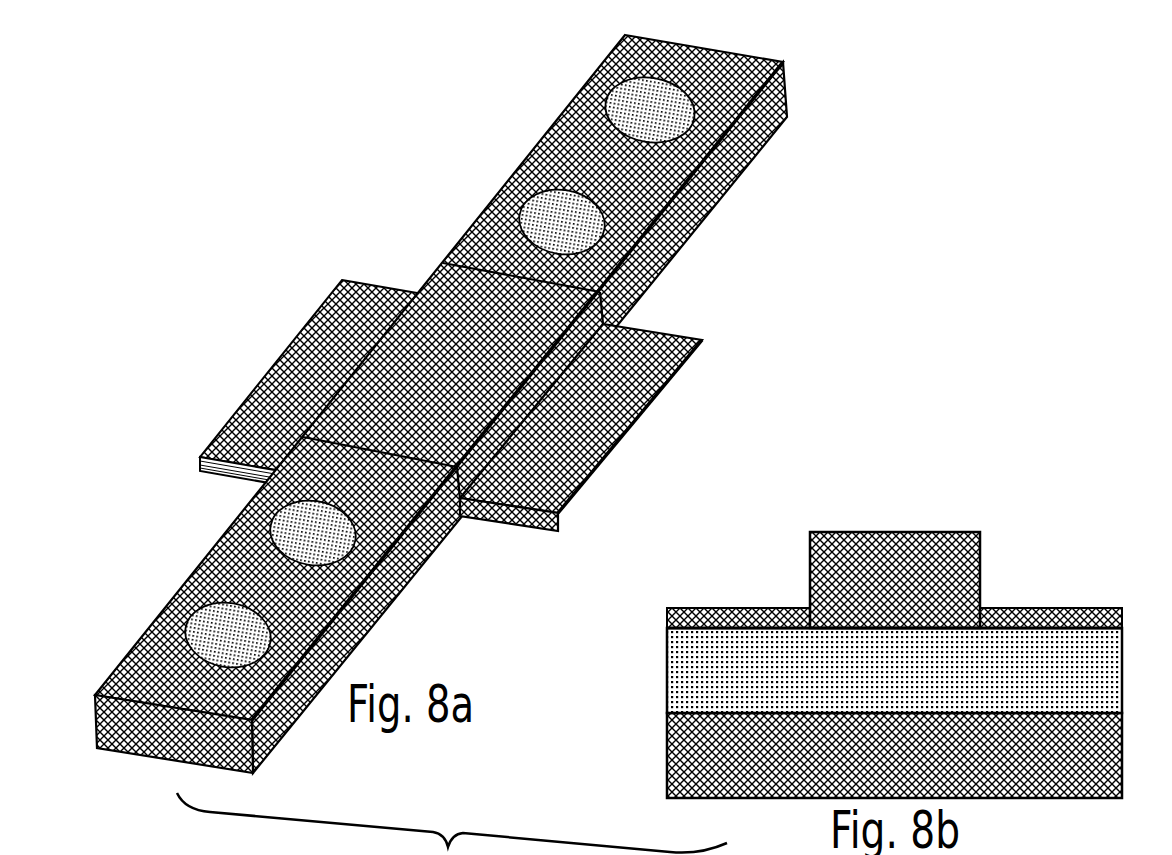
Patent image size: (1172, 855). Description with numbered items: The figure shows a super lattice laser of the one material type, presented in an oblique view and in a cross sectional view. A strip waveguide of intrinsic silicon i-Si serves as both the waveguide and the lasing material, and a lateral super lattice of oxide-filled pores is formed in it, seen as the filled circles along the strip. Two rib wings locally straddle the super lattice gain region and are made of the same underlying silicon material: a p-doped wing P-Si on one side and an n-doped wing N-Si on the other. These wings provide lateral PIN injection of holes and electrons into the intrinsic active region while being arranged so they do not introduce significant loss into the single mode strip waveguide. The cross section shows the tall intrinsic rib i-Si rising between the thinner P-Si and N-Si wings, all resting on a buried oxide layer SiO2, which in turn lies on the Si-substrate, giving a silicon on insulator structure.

In FIG. 8A, the P-Si wing P-Si is at (320, 384).
In FIG. 8B, the P-Si wing P-Si is at (742, 608).
In FIG. 8A, the intrinsic Si strip waveguide i-Si is at (441, 404).
In FIG. 8B, the intrinsic Si strip waveguide i-Si is at (895, 580).
In FIG. 8A, the N-Si wing N-Si is at (581, 427).
In FIG. 8B, the N-Si wing N-Si is at (1047, 608).
In FIG. 8B, the SiO2 insulator layer SiO2 is at (894, 670).
In FIG. 8B, the Si substrate Si-substrate is at (894, 755).